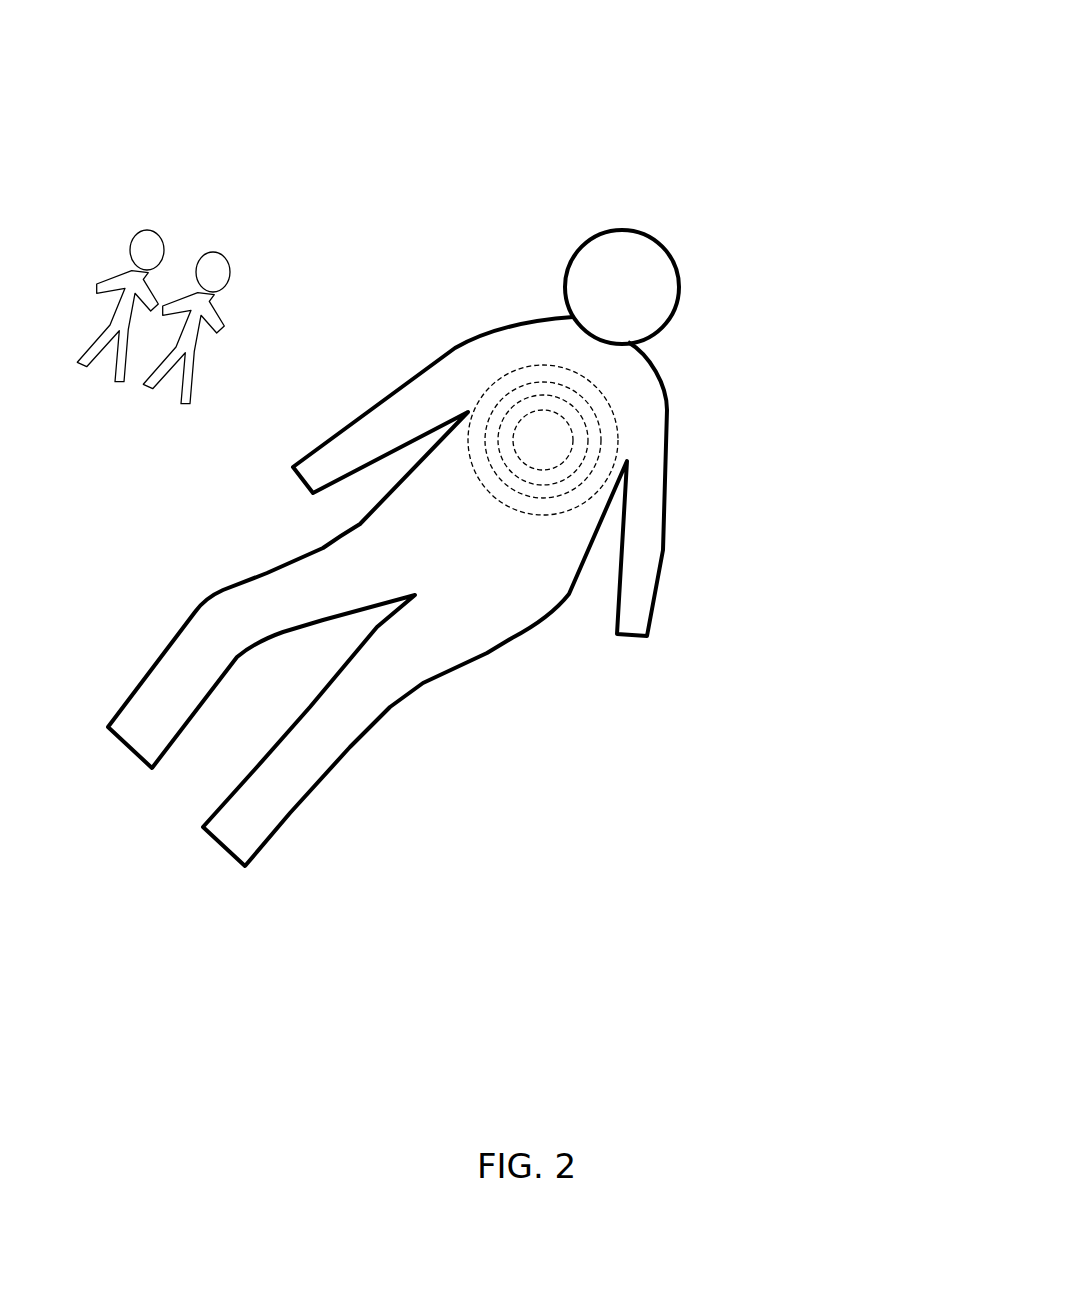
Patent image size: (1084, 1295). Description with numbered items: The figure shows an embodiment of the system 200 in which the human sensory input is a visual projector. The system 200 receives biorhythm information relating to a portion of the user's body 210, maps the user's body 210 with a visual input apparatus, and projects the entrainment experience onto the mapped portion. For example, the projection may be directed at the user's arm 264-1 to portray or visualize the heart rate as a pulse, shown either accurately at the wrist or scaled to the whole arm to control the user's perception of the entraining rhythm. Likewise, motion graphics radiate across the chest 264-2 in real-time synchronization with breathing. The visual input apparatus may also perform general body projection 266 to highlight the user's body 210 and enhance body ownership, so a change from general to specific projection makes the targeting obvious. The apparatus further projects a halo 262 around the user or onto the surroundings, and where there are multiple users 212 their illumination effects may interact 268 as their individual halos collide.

The system 200 is at (525, 28).
The user's body 210 is at (638, 298).
The multiple users 212 is at (153, 306).
The halo 262 is at (703, 190).
The user's arm 264-1 is at (628, 620).
The chest 264-2 is at (510, 570).
The general body projection 266 is at (230, 867).
The interaction of illumination effects 268 is at (85, 392).